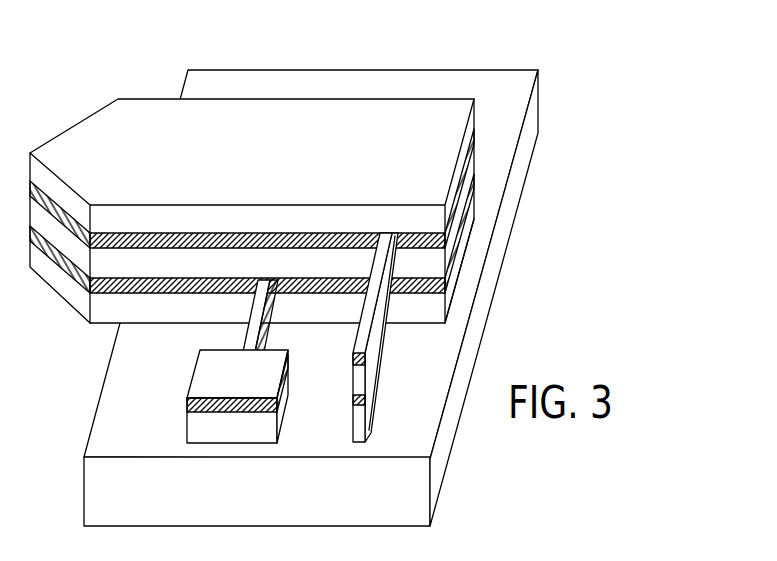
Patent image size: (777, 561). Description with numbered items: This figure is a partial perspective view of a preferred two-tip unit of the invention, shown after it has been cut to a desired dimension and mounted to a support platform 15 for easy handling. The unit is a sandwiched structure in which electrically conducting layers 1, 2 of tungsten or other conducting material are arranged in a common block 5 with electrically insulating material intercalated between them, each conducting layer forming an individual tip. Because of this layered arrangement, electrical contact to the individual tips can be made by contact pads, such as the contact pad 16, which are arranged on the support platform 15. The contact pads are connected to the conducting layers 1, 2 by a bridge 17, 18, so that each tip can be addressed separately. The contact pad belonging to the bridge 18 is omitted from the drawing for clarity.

The common block 5 is at (252, 193).
The conducting layer 1 is at (156, 232).
The conducting layer 2 is at (135, 294).
The support platform 15 is at (181, 503).
The contact pad 16 is at (262, 368).
The bridge 17 is at (247, 330).
The bridge 18 is at (370, 325).